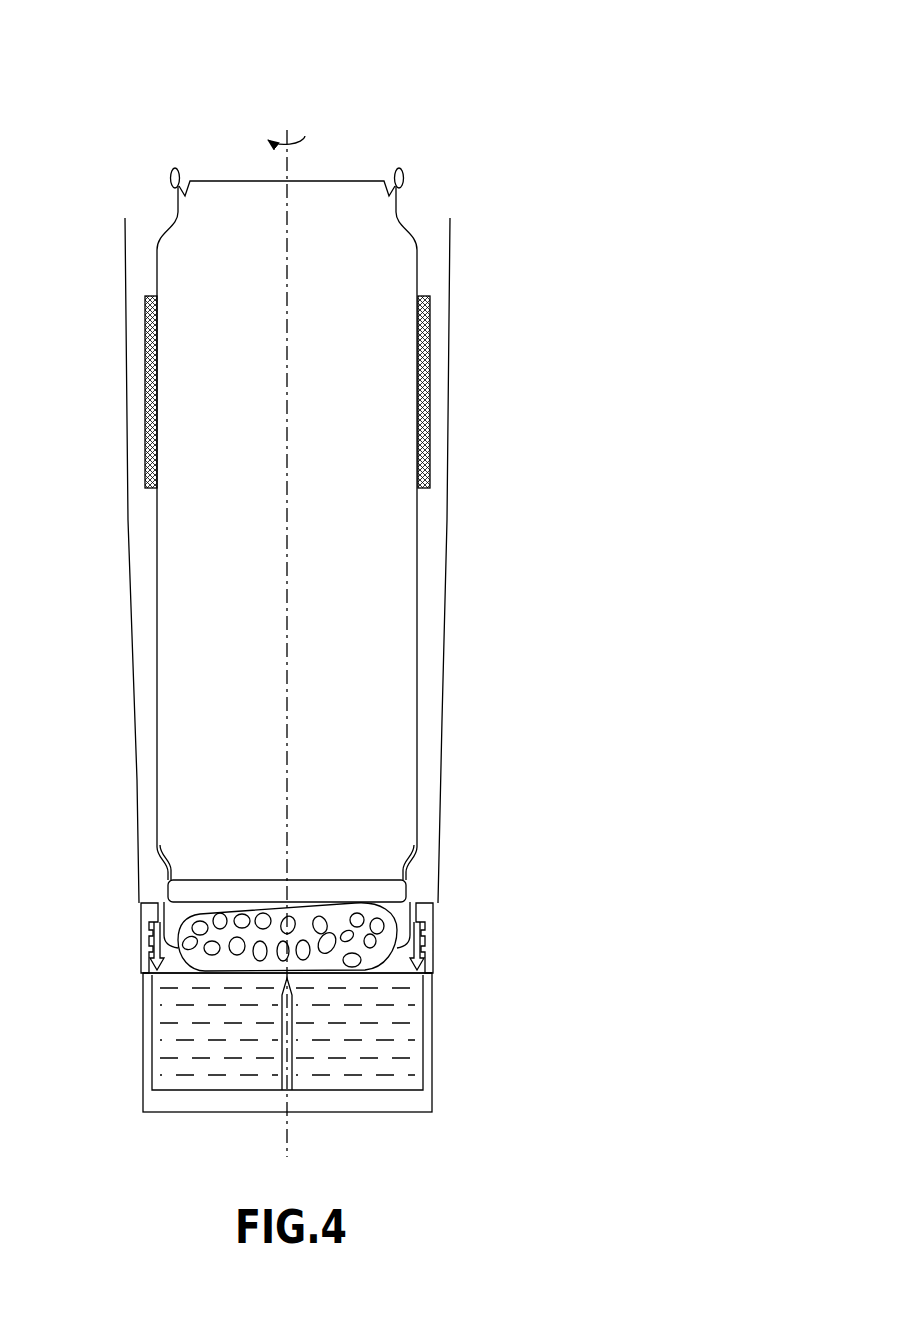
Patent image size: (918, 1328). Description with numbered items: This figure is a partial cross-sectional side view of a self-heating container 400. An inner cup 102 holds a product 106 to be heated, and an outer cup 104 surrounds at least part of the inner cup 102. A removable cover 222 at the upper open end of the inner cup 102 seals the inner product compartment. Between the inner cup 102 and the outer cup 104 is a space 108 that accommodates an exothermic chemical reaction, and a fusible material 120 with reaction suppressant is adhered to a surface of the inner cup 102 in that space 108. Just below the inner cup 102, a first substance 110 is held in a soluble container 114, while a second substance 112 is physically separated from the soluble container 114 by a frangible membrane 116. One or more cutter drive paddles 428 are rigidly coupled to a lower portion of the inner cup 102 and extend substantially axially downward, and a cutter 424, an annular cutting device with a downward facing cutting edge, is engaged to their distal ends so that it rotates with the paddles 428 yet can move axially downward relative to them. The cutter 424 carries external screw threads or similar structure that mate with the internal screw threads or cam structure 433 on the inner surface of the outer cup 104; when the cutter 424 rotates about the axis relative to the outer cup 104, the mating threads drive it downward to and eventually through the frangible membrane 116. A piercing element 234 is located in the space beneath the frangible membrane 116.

The self-heating container 400 is at (523, 112).
The removable cover 222 is at (357, 135).
The inner cup 102 is at (295, 470).
The outer cup 104 is at (442, 703).
The product 106 is at (247, 510).
The space 108 is at (432, 638).
The fusible material 120 is at (433, 370).
The cutter drive paddles 428 is at (168, 873).
The internal screw threads or cam structure 433 is at (436, 926).
The cutter 424 is at (153, 964).
The first substance 110 is at (360, 918).
The soluble container 114 is at (375, 962).
The frangible membrane 116 is at (178, 973).
The second substance 112 is at (418, 1055).
The piercing element 234 is at (280, 1062).